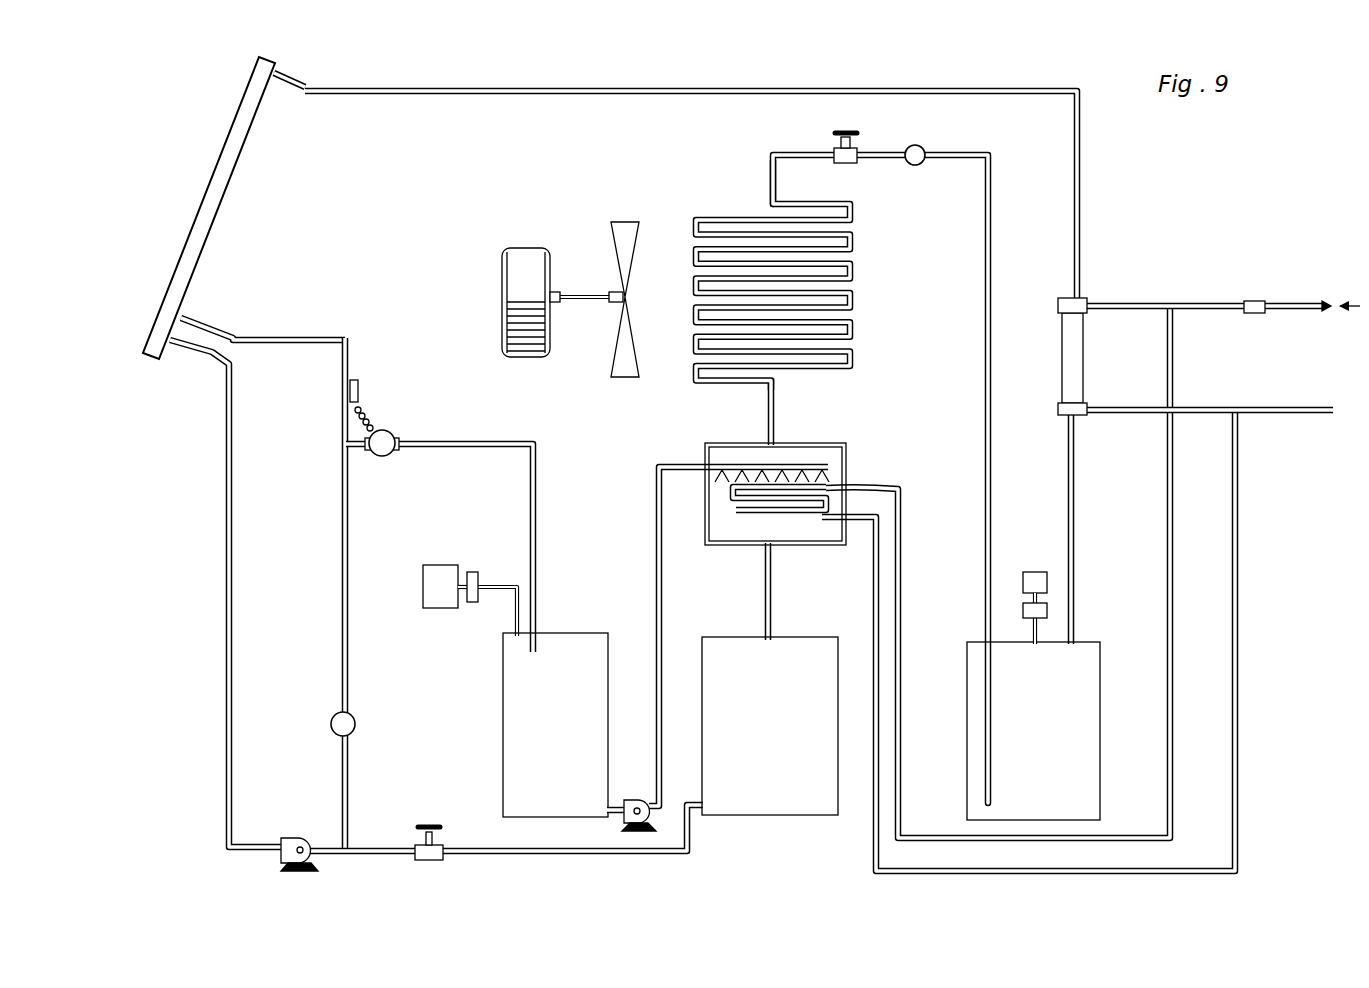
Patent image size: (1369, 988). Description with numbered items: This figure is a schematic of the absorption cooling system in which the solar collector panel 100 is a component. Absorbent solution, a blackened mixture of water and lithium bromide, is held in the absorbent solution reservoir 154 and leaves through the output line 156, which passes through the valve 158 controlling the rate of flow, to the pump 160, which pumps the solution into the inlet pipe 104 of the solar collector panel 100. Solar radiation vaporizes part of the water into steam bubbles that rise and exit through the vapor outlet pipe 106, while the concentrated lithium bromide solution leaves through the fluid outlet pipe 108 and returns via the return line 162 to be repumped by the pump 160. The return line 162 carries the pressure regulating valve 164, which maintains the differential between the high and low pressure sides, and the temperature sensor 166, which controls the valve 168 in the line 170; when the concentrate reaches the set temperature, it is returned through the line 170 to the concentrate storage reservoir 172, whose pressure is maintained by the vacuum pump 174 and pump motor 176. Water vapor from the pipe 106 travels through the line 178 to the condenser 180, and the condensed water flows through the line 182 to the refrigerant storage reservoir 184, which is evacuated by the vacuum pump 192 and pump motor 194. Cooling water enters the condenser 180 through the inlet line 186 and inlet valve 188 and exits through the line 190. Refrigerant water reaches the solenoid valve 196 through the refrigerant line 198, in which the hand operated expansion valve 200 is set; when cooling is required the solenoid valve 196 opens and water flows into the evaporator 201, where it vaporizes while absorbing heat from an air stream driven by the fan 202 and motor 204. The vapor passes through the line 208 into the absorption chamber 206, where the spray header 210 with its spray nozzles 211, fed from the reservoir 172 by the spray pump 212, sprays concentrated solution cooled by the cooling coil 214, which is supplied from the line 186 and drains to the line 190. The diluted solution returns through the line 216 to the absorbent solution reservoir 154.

The solar collector panel 100 is at (188, 222).
The inlet pipe 104 is at (195, 355).
The vapor outlet pipe 106 is at (296, 85).
The fluid outlet pipe 108 is at (218, 328).
The absorbent solution reservoir 154 is at (760, 815).
The output line 156 is at (585, 858).
The valve 158 is at (437, 862).
The pump 160 is at (305, 868).
The return line 162 is at (347, 553).
The pressure regulating valve 164 is at (351, 720).
The temperature sensor 166 is at (358, 388).
The valve 168 is at (385, 438).
The line 170 is at (487, 440).
The concentrate storage reservoir 172 is at (572, 656).
The vacuum pump 174 is at (473, 585).
The pump motor 176 is at (433, 592).
The line 178 is at (960, 88).
The condenser 180 is at (1090, 293).
The line 182 is at (1074, 500).
The refrigerant storage reservoir 184 is at (1078, 690).
The inlet line 186 is at (1213, 300).
The inlet valve 188 is at (1258, 304).
The line 190 is at (1282, 408).
The vacuum pump 192 is at (1047, 611).
The pump motor 194 is at (1047, 583).
The solenoid valve 196 is at (928, 148).
The refrigerant line 198 is at (992, 232).
The expansion valve 200 is at (860, 133).
The evaporator 201 is at (857, 295).
The fan 202 is at (625, 222).
The motor 204 is at (525, 248).
The absorption chamber 206 is at (845, 445).
The line 208 is at (778, 415).
The spray header 210 is at (735, 465).
The spray nozzles 211 is at (862, 486).
The spray pump 212 is at (632, 800).
The cooling coil 214 is at (822, 517).
The line 216 is at (762, 604).